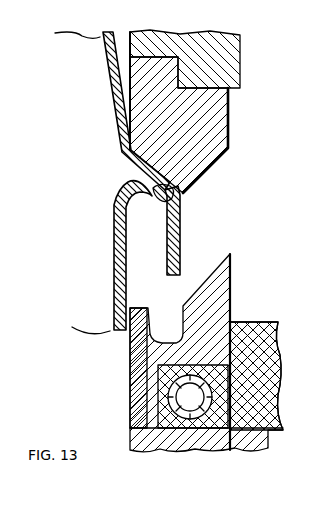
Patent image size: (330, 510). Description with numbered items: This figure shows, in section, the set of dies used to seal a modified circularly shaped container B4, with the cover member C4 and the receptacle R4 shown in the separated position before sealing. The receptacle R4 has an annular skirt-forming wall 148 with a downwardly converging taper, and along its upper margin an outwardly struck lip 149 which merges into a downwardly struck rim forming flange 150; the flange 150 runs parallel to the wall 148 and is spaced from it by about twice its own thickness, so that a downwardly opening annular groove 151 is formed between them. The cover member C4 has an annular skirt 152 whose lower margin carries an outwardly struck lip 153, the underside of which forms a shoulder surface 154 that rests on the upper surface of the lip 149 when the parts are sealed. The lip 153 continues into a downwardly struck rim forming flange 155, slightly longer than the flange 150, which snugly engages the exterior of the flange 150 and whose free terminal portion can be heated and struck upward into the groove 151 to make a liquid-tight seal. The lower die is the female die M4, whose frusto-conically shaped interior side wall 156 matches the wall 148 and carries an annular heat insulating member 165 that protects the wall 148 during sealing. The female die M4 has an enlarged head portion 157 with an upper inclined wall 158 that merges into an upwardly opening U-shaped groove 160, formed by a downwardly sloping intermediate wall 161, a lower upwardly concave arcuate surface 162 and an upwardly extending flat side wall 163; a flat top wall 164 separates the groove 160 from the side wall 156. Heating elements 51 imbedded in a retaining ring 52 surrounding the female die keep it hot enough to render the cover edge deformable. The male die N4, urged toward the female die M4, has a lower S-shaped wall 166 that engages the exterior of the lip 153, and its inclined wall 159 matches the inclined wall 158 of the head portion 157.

The annular skirt 152 is at (103, 68).
The container B4 is at (110, 97).
The cover member C4 is at (110, 127).
The male die N4 is at (232, 115).
The inclined wall 159 is at (230, 157).
The S-shaped wall 166 is at (150, 186).
The outwardly struck lip 149 is at (128, 183).
The outwardly struck lip 153 is at (190, 180).
The annular groove 151 is at (114, 203).
The shoulder surface 154 is at (182, 215).
The rim forming flange 150 is at (128, 222).
The rim forming flange 155 is at (182, 244).
The skirt-forming wall 148 is at (113, 247).
The upper inclined wall 158 is at (214, 262).
The receptacle R4 is at (110, 268).
The enlarged head portion 157 is at (232, 283).
The flat top wall 164 is at (113, 292).
The female die M4 is at (233, 297).
The flat side wall 163 is at (113, 312).
The U-shaped groove 160 is at (168, 313).
The intermediate wall 161 is at (128, 334).
The arcuate surface 162 is at (128, 345).
The heating elements 51 is at (223, 390).
The heat insulating member 165 is at (128, 383).
The interior side wall 156 is at (130, 410).
The retaining ring 52 is at (220, 403).